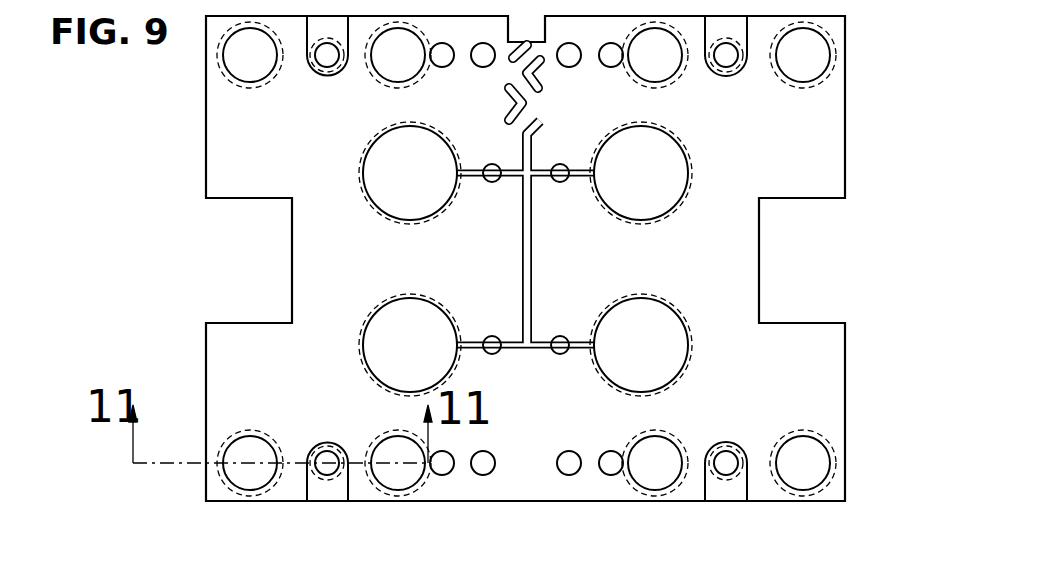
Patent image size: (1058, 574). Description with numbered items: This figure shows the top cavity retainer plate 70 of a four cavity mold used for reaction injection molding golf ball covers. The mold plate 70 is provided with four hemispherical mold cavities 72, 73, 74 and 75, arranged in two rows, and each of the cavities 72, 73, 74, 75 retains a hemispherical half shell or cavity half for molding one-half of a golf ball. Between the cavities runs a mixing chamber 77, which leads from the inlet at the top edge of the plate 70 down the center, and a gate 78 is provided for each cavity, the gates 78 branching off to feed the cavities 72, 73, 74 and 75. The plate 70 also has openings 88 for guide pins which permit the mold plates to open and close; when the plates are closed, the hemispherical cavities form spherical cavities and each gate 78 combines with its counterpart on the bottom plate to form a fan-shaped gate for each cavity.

The top cavity retainer plate 70 is at (832, 120).
The hemispherical mold cavity 72 is at (690, 175).
The hemispherical mold cavity 73 is at (690, 348).
The hemispherical mold cavity 74 is at (365, 348).
The hemispherical mold cavity 75 is at (365, 175).
The mixing chamber 77 is at (505, 87).
The gate 78 is at (476, 182).
The opening for guide pin 88 is at (228, 458).